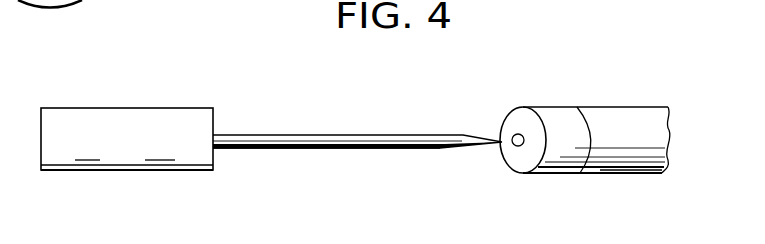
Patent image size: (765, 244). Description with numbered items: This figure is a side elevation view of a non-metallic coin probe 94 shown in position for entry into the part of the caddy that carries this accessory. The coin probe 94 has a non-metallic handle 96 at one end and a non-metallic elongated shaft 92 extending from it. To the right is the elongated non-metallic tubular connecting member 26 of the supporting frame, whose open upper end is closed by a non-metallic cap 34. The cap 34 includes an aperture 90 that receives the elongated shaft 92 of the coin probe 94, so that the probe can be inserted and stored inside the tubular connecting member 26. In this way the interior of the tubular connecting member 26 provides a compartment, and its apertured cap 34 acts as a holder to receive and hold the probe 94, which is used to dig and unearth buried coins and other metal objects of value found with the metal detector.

The non-metallic handle 96 is at (146, 108).
The elongated shaft 92 is at (288, 136).
The coin probe 94 is at (265, 154).
The non-metallic cap 34 is at (517, 106).
The aperture 90 is at (513, 146).
The tubular connecting member 26 is at (636, 173).